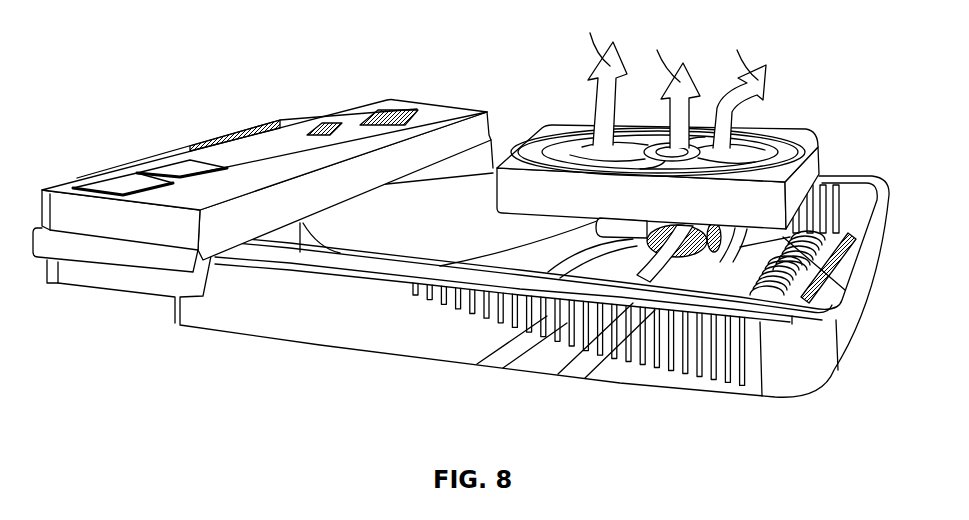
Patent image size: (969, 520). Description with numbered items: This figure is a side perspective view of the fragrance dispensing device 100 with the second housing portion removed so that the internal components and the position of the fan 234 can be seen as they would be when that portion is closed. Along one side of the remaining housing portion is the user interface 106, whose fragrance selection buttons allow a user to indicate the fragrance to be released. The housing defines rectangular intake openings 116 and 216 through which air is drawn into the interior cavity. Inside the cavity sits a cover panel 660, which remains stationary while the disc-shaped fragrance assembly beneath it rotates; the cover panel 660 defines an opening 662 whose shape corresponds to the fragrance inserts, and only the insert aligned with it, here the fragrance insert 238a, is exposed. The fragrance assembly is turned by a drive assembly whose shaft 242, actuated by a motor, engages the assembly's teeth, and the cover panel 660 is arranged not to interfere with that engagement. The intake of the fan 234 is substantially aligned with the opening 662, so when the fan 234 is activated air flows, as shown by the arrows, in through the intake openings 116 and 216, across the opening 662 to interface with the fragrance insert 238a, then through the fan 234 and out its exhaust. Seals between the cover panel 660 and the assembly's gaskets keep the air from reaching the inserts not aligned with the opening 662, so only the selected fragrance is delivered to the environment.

The fragrance dispensing device 100 is at (461, 255).
The user interface 106 is at (247, 152).
The intake openings 116 is at (708, 362).
The intake openings 216 is at (843, 212).
The fan 234 is at (522, 193).
The fragrance insert 238a is at (675, 250).
The shaft 242 is at (845, 282).
The cover panel 660 is at (392, 224).
The opening 662 is at (645, 238).